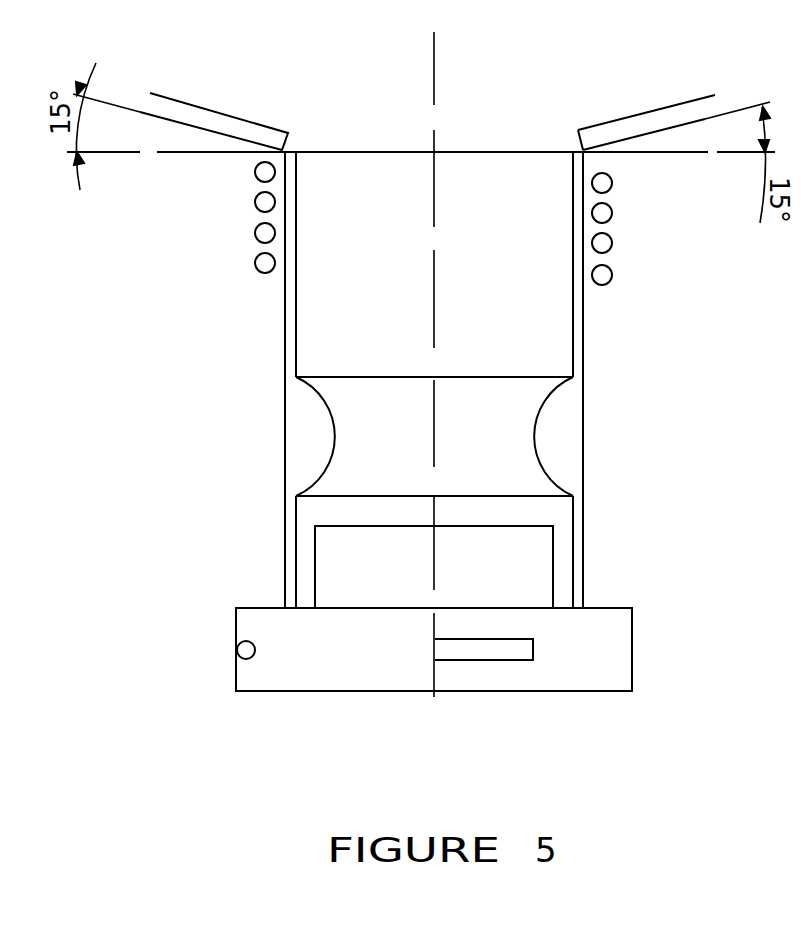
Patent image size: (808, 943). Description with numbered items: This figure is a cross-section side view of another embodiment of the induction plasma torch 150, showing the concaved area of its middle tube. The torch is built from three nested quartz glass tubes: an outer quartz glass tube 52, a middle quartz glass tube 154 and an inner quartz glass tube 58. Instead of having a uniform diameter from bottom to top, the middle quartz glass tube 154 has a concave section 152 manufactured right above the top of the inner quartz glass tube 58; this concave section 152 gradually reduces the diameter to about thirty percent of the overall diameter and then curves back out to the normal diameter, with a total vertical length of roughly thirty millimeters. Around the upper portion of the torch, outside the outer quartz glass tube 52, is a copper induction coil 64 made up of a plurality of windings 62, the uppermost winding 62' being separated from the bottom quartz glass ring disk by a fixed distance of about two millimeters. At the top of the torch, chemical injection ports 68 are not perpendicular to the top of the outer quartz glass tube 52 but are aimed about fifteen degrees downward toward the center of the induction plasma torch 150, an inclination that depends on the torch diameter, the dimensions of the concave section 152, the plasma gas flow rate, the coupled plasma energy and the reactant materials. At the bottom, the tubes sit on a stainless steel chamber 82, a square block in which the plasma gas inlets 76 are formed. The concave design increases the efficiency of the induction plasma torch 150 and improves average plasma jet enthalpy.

The outer quartz glass tube 52 is at (284, 464).
The inner quartz glass tube 58 is at (555, 567).
The windings 62 is at (170, 234).
The uppermost winding 62' is at (223, 182).
The copper induction coil 64 is at (640, 229).
The chemical injection ports 68 is at (206, 112).
The plasma gas inlets 76 is at (238, 649).
The stainless steel chamber 82 is at (632, 658).
The induction plasma torch 150 is at (642, 399).
The concave section 152 is at (380, 427).
The middle quartz glass tube 154 is at (295, 320).